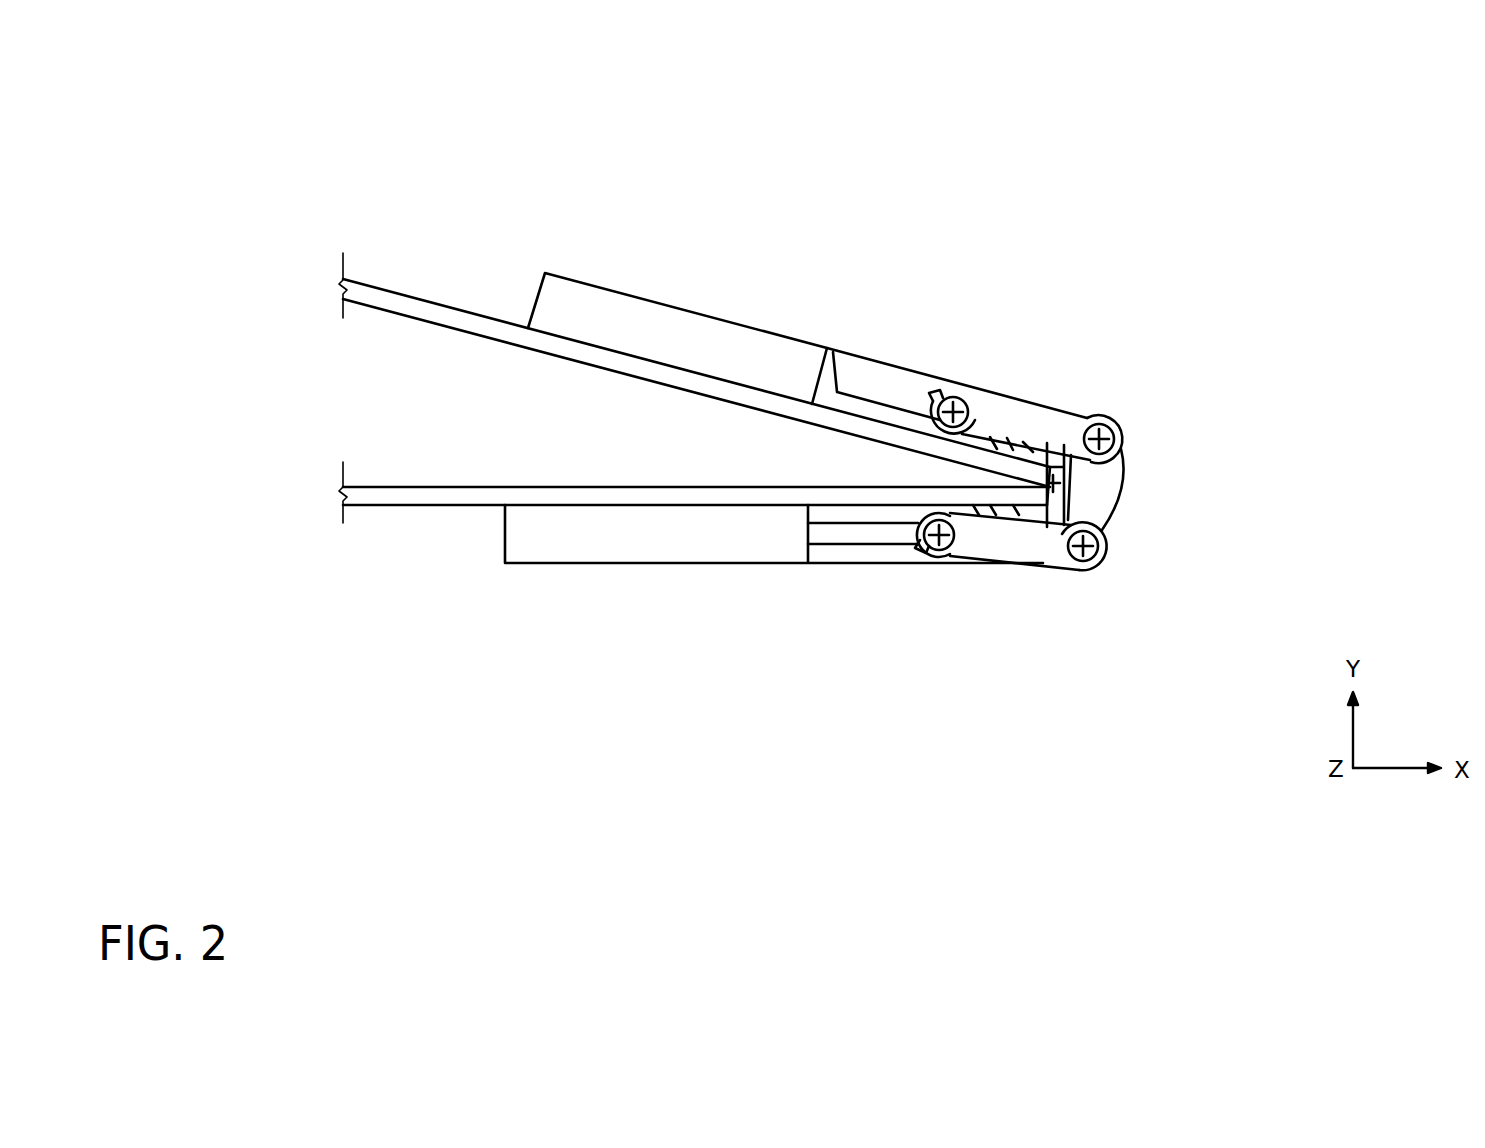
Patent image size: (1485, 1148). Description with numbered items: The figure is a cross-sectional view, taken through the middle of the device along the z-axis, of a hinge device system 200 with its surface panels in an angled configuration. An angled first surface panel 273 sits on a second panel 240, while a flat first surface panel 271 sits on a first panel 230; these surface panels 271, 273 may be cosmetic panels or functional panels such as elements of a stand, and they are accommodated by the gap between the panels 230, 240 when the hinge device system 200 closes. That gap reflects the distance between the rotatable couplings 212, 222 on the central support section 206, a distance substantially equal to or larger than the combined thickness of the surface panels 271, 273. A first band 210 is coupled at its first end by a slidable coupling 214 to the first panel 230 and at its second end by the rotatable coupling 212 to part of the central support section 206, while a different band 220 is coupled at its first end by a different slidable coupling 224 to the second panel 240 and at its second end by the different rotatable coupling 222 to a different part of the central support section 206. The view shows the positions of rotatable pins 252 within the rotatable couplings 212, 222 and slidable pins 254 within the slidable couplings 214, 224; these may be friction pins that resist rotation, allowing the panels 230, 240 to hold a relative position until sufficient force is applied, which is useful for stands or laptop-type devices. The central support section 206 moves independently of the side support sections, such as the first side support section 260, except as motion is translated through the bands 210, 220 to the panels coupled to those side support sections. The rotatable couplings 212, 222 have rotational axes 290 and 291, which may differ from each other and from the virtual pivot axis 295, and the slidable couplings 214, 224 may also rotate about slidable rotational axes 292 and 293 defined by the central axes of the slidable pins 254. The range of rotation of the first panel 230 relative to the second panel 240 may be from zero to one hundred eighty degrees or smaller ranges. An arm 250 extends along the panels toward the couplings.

The hinge device system 200 is at (338, 135).
The central support section 206 is at (1113, 503).
The first band 210 is at (990, 548).
The rotatable coupling 212 is at (1107, 560).
The slidable coupling 214 is at (935, 553).
The different band 220 is at (1006, 427).
The different rotatable coupling 222 is at (1107, 414).
The different slidable coupling 224 is at (952, 392).
The first panel 230 is at (567, 548).
The second panel 240 is at (632, 313).
The arm 250 is at (853, 387).
The rotatable pins 252 is at (1117, 422).
The slidable pins 254 is at (940, 391).
The first side support section 260 is at (1036, 562).
The first surface panel 271 is at (395, 497).
The second surface panel 273 is at (403, 305).
The rotational axis 290 is at (1068, 572).
The rotational axis 291 is at (1120, 449).
The slidable rotational axis 292 is at (958, 555).
The slidable rotational axis 293 is at (967, 392).
The virtual pivot axis 295 is at (1071, 477).